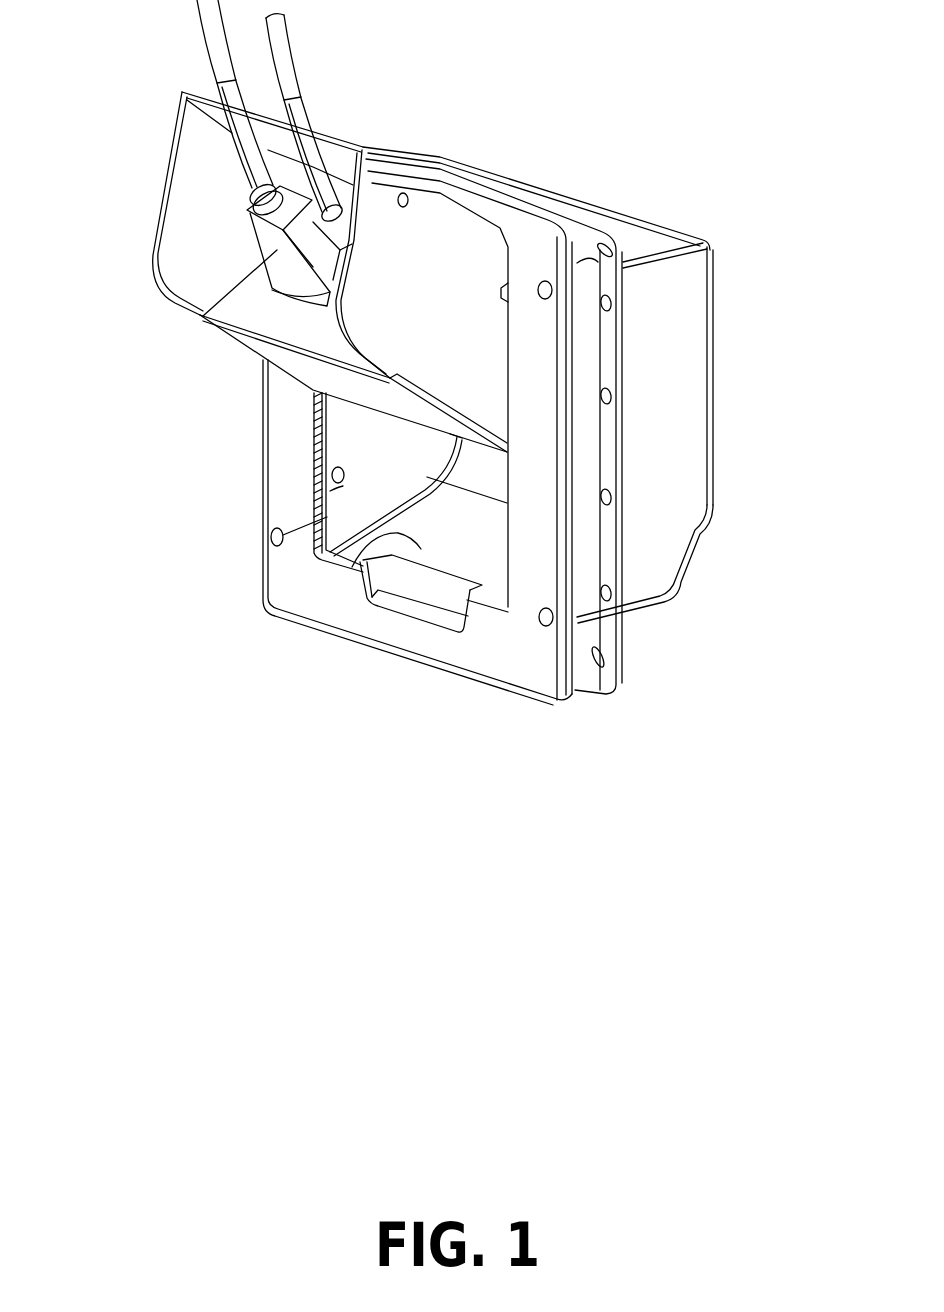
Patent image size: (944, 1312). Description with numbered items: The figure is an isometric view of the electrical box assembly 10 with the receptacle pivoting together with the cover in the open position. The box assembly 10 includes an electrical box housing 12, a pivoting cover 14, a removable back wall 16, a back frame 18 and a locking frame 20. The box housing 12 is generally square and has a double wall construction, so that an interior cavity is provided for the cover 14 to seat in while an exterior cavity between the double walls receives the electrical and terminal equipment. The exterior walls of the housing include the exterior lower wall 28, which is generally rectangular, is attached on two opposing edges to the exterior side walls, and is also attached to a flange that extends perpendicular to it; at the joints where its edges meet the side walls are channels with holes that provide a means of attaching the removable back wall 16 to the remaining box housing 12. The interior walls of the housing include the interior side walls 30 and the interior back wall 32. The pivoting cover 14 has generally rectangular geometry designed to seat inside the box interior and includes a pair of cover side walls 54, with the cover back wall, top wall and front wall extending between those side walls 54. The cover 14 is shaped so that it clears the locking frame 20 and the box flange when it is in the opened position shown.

The electrical box assembly 10 is at (632, 152).
The electrical box housing 12 is at (677, 412).
The pivoting cover 14 is at (183, 205).
The removable back wall 16 is at (712, 477).
The back frame 18 is at (625, 657).
The locking frame 20 is at (520, 663).
The exterior lower wall 28 is at (650, 607).
The interior side walls 30 is at (265, 533).
The interior back wall 32 is at (375, 540).
The cover side walls 54 is at (423, 257).